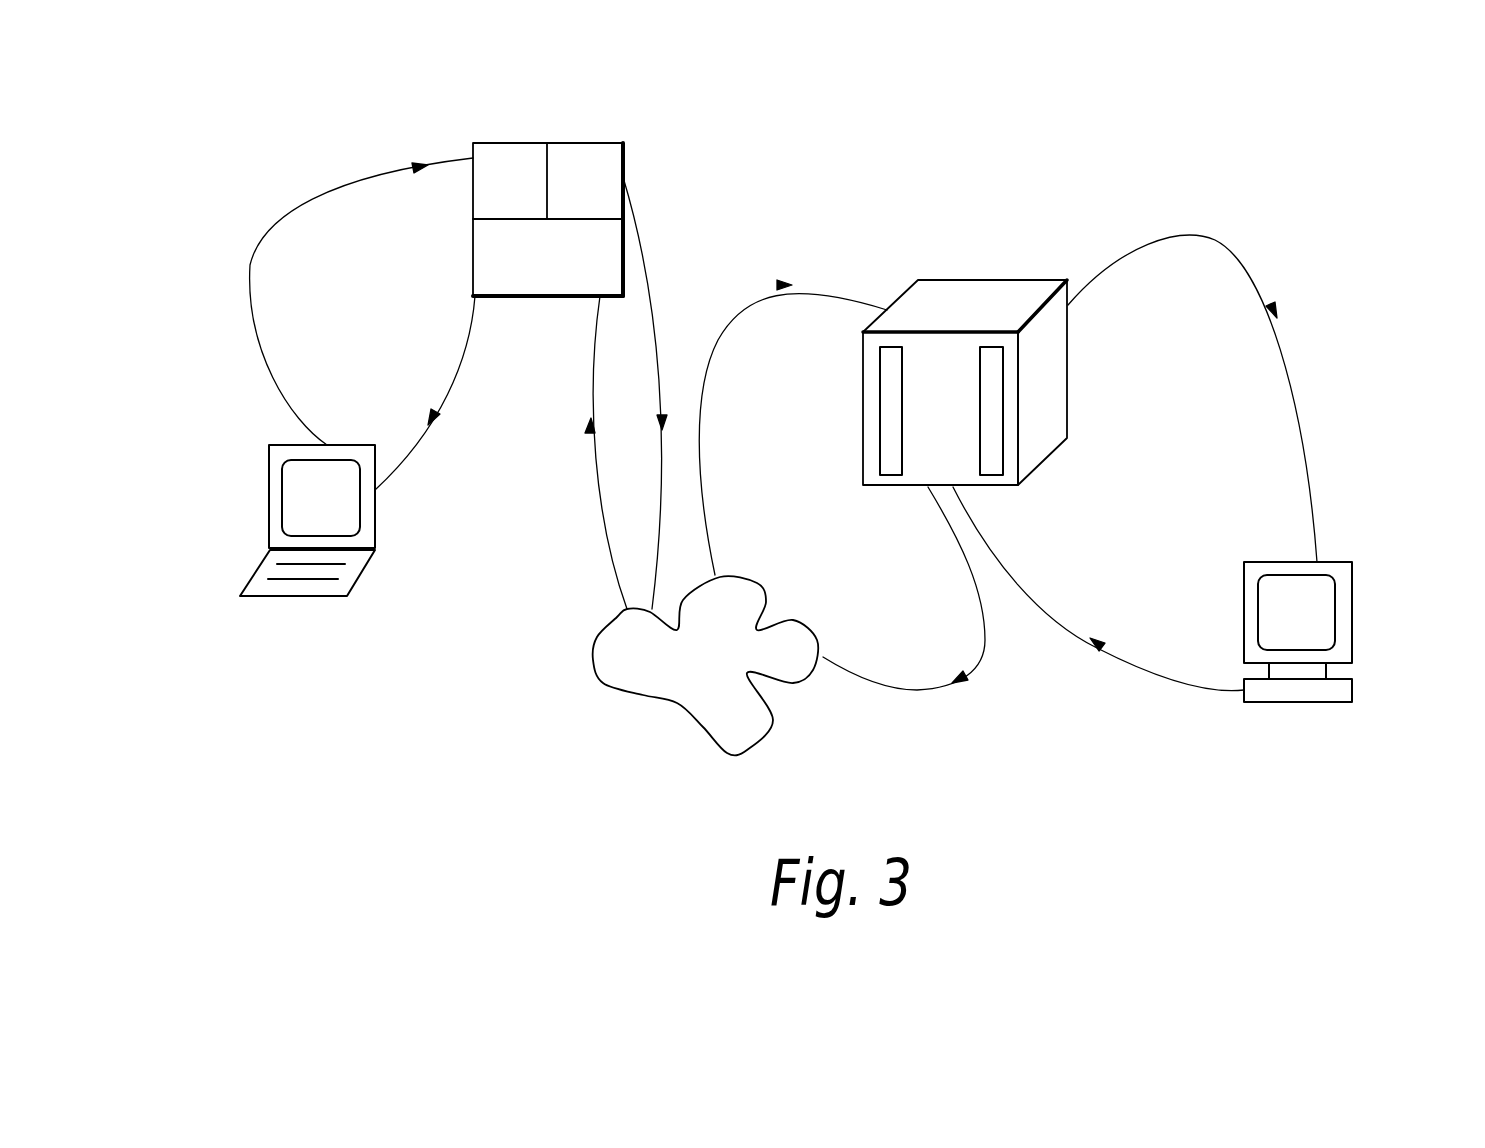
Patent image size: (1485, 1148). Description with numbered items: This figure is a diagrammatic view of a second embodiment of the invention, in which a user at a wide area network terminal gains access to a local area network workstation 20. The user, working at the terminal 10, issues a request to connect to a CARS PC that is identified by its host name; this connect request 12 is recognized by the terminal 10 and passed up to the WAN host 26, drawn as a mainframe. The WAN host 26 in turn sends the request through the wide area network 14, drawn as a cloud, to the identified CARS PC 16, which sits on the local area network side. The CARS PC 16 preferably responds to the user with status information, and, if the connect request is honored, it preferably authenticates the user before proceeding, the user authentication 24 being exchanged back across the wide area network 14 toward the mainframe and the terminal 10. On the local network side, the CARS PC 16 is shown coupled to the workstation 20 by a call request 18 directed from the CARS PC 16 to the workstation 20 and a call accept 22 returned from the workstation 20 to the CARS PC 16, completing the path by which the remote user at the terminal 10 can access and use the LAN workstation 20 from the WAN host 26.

The terminal 10 is at (272, 500).
The connect request 12 is at (247, 282).
The wide area network 14 is at (593, 672).
The CARS PC 16 is at (1055, 280).
The call request link 18 is at (1298, 373).
The LAN workstation 20 is at (1352, 612).
The call accept link 22 is at (1142, 672).
The user authentication 24 is at (443, 398).
The WAN host 26 is at (623, 162).